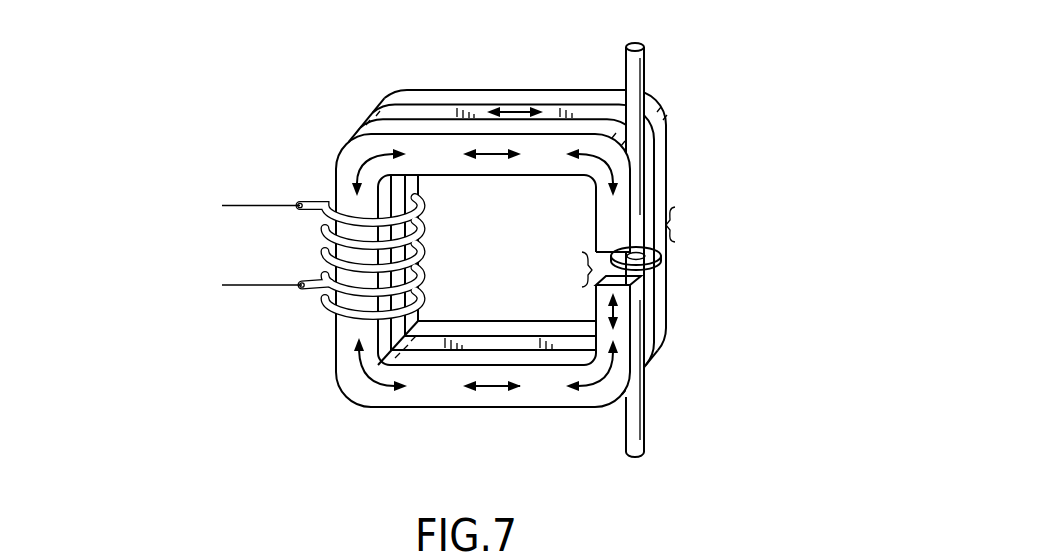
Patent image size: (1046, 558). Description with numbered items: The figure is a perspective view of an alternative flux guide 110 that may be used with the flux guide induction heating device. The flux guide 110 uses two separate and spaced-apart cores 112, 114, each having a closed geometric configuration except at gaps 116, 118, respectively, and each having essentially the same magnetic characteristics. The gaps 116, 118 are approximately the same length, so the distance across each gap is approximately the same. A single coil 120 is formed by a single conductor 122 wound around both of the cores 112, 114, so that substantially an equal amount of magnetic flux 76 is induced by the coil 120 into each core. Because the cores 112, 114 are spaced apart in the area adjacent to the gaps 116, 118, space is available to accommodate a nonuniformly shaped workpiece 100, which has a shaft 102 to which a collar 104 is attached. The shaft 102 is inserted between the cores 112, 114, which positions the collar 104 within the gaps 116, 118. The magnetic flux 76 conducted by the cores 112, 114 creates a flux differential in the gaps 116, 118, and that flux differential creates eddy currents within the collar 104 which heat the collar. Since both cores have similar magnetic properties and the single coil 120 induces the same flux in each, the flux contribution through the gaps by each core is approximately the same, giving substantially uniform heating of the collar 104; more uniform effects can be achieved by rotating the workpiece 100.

The workpiece 100 is at (475, 279).
The shaft 102 is at (638, 73).
The collar 104 is at (655, 250).
The flux guide 110 is at (496, 199).
The core 112 is at (384, 128).
The core 114 is at (418, 96).
The gap 116 is at (569, 269).
The gap 118 is at (692, 224).
The coil 120 is at (438, 180).
The conductor 122 is at (302, 284).
The magnetic flux 76 is at (485, 248).